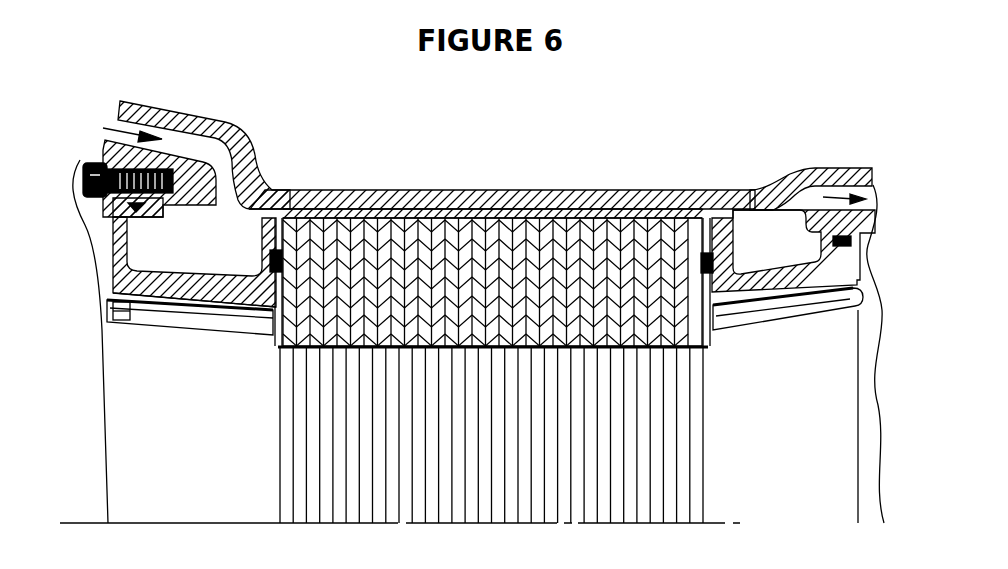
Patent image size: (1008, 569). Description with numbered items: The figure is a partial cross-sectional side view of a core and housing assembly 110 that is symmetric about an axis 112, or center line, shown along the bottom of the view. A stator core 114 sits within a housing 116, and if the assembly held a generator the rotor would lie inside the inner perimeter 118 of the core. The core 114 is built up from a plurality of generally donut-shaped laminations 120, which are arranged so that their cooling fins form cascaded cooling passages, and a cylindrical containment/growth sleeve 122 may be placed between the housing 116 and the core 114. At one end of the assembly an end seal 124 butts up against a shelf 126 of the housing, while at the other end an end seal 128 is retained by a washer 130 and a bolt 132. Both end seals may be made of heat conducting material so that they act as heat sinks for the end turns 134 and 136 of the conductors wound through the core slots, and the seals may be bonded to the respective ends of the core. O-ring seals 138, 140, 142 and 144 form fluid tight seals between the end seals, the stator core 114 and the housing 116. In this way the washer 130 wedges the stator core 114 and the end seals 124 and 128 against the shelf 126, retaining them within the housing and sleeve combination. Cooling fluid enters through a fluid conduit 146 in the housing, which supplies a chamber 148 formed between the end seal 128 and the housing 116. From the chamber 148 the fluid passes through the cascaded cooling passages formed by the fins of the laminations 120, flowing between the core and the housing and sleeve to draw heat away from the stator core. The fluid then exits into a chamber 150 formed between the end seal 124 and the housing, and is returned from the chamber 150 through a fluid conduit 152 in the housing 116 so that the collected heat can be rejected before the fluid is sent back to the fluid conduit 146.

The core and housing assembly 110 is at (332, 136).
The axis 112 is at (320, 526).
The stator core 114 is at (373, 212).
The housing 116 is at (455, 190).
The inner perimeter 118 is at (650, 350).
The laminations 120 is at (618, 237).
The containment/growth sleeve 122 is at (520, 212).
The end seal 124 is at (742, 232).
The shelf 126 is at (863, 338).
The end seal 128 is at (170, 284).
The washer 130 is at (123, 237).
The bolt 132 is at (92, 162).
The end turns 134 is at (773, 332).
The end turns 136 is at (223, 330).
The O-ring seal 138 is at (695, 217).
The O-ring seal 140 is at (830, 241).
The O-ring seal 142 is at (268, 256).
The O-ring seal 144 is at (153, 213).
The fluid conduit 146 is at (177, 143).
The chamber 148 is at (242, 212).
The chamber 150 is at (762, 228).
The fluid conduit 152 is at (817, 200).